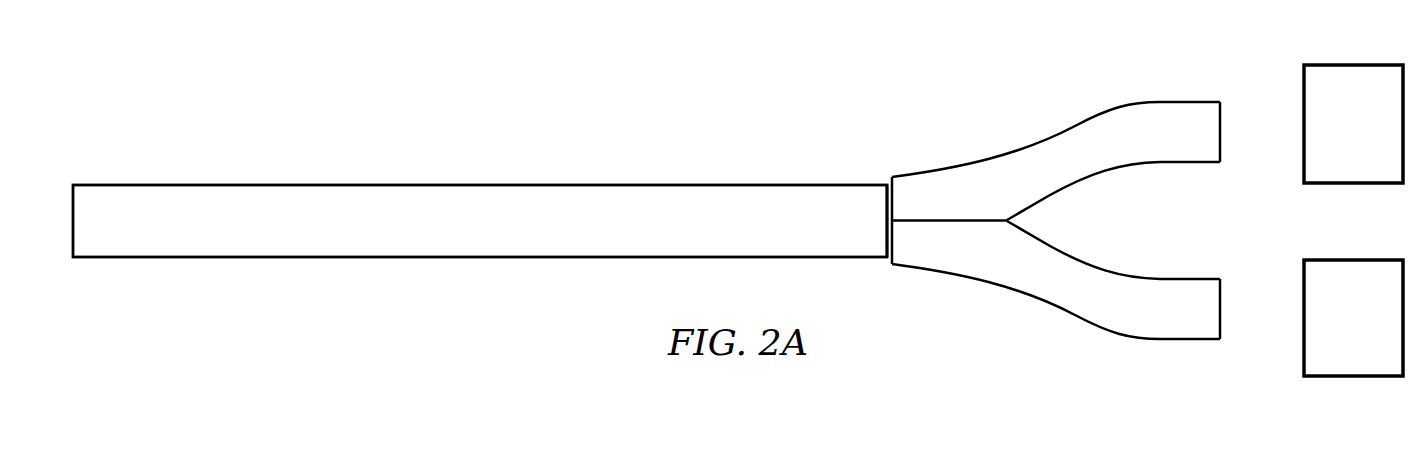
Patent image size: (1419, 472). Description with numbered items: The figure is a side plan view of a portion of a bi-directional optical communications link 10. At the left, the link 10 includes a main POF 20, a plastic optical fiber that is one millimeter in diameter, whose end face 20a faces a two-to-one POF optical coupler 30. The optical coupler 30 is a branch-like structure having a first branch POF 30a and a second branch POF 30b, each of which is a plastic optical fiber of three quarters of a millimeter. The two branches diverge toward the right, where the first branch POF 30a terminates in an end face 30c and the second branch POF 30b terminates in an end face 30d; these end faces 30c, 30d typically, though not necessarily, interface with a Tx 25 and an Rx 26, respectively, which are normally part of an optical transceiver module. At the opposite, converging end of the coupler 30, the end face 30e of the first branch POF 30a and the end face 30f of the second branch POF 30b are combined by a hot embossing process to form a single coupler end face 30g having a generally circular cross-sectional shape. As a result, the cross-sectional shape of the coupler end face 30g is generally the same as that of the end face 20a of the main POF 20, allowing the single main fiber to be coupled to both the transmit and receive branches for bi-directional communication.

The bi-directional optical communications link 10 is at (338, 85).
The main POF 20 is at (586, 139).
The end face of the main POF 20a is at (887, 195).
The Tx 25 is at (1341, 152).
The Rx 26 is at (1341, 346).
The 2-to-1 POF optical coupler 30 is at (1040, 191).
The first branch POF 30a is at (1080, 123).
The second branch POF 30b is at (1066, 311).
The end face of the first branch POF 30c is at (1222, 124).
The end face of the second branch POF 30d is at (1222, 307).
The end face of the first branch POF 30e is at (897, 184).
The end face of the second branch POF 30f is at (893, 250).
The coupler end face 30g is at (887, 240).